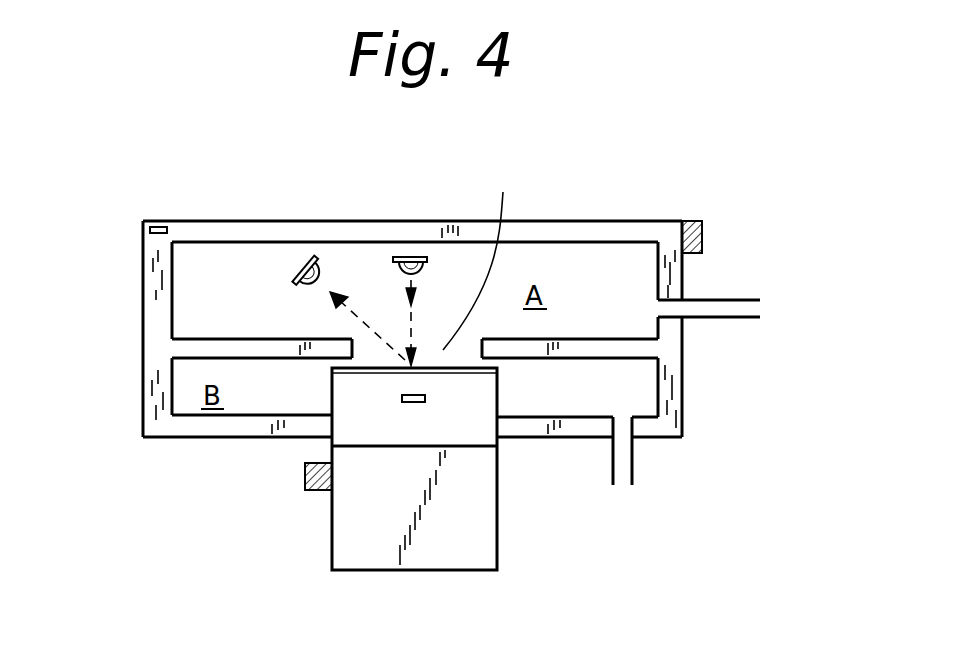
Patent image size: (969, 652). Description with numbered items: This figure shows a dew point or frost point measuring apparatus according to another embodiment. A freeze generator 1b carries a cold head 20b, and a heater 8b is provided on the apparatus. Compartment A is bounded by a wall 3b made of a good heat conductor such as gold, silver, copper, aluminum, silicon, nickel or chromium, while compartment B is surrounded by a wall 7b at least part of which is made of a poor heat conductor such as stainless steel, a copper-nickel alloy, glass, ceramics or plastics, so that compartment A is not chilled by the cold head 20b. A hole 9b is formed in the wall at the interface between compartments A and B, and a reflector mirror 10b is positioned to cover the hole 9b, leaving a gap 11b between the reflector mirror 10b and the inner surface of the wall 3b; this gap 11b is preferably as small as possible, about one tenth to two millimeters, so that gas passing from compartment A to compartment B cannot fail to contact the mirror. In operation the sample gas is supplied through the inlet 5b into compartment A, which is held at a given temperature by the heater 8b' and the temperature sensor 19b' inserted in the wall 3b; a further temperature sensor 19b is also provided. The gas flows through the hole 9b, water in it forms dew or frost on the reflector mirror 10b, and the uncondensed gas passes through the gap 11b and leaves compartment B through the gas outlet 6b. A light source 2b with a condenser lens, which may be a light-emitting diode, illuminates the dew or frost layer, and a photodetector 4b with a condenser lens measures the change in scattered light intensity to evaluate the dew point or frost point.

The freeze generator 1b is at (497, 530).
The light source 2b is at (427, 262).
The wall of compartment A 3b is at (573, 235).
The photodetector 4b is at (302, 272).
The inlet 5b is at (770, 311).
The gas outlet 6b is at (622, 488).
The wall of compartment B 7b is at (158, 390).
The heater 8b is at (272, 499).
The heater 8b' is at (736, 231).
The hole 9b is at (484, 258).
The reflector mirror 10b is at (365, 377).
The gap 11b is at (330, 362).
The temperature sensor 19b is at (387, 513).
The temperature sensor 19b' is at (173, 187).
The cold head 20b is at (414, 425).